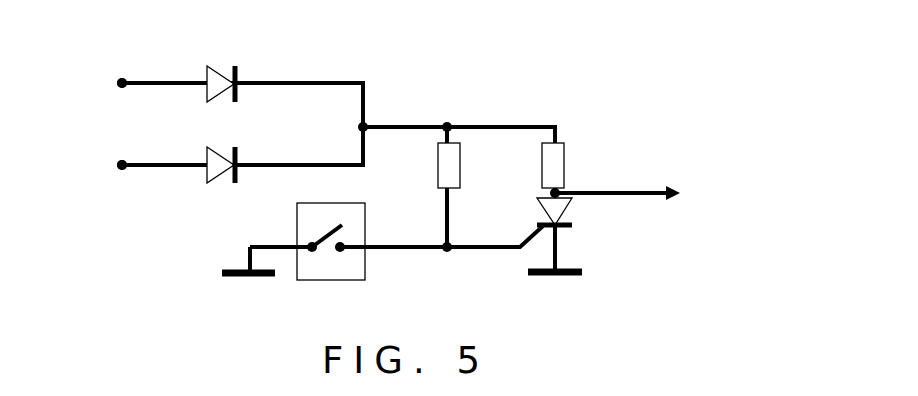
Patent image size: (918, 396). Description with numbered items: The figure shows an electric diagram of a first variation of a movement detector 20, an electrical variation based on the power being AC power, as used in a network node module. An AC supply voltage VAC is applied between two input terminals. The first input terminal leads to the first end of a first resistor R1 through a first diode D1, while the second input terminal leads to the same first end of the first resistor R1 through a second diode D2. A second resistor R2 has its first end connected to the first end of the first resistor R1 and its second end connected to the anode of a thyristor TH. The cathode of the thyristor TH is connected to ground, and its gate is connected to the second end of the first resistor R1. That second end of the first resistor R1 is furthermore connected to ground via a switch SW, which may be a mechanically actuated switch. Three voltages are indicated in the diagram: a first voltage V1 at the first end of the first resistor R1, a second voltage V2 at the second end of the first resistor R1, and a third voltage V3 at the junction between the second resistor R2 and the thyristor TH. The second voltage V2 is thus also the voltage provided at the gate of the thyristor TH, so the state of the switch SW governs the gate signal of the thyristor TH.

The movement detector 20 is at (622, 132).
The AC supply voltage VAC is at (102, 124).
The first diode D1 is at (230, 70).
The second diode D2 is at (219, 147).
The first voltage V1 is at (443, 102).
The first resistor R1 is at (426, 165).
The second resistor R2 is at (526, 165).
The third voltage V3 is at (615, 176).
The thyristor TH is at (530, 207).
The second voltage V2 is at (461, 265).
The switch SW is at (331, 262).